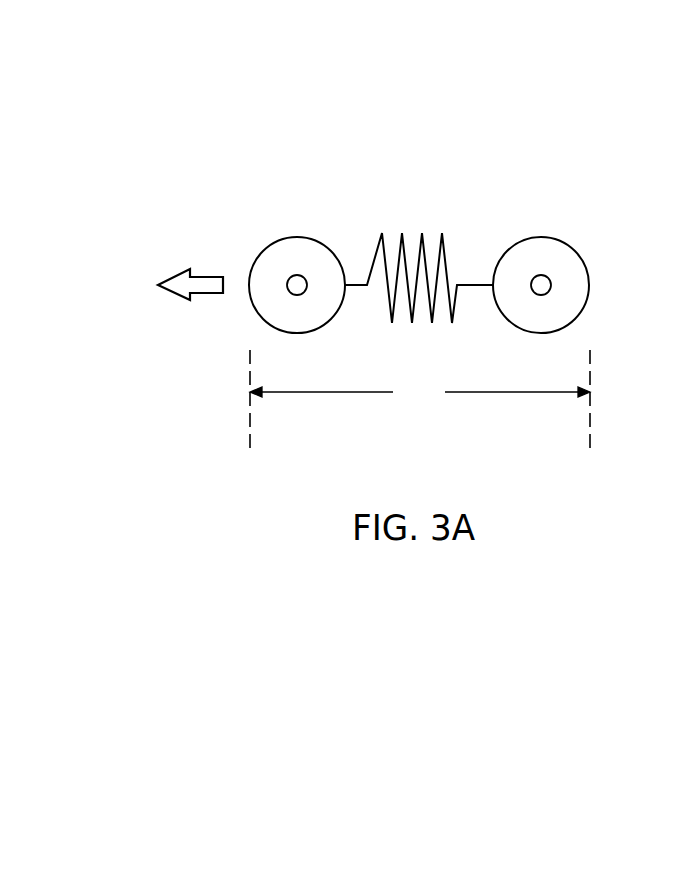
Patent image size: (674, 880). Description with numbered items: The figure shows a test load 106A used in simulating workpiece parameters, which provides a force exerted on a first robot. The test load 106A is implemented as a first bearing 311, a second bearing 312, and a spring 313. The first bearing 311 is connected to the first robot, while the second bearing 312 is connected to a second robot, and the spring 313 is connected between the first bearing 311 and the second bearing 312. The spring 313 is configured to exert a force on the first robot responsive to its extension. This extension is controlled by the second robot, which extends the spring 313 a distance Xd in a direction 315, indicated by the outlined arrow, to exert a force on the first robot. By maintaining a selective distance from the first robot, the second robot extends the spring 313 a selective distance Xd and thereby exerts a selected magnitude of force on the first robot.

The test load 106A is at (632, 63).
The first bearing 311 is at (297, 237).
The second bearing 312 is at (541, 237).
The spring 313 is at (382, 233).
The direction 315 is at (177, 275).